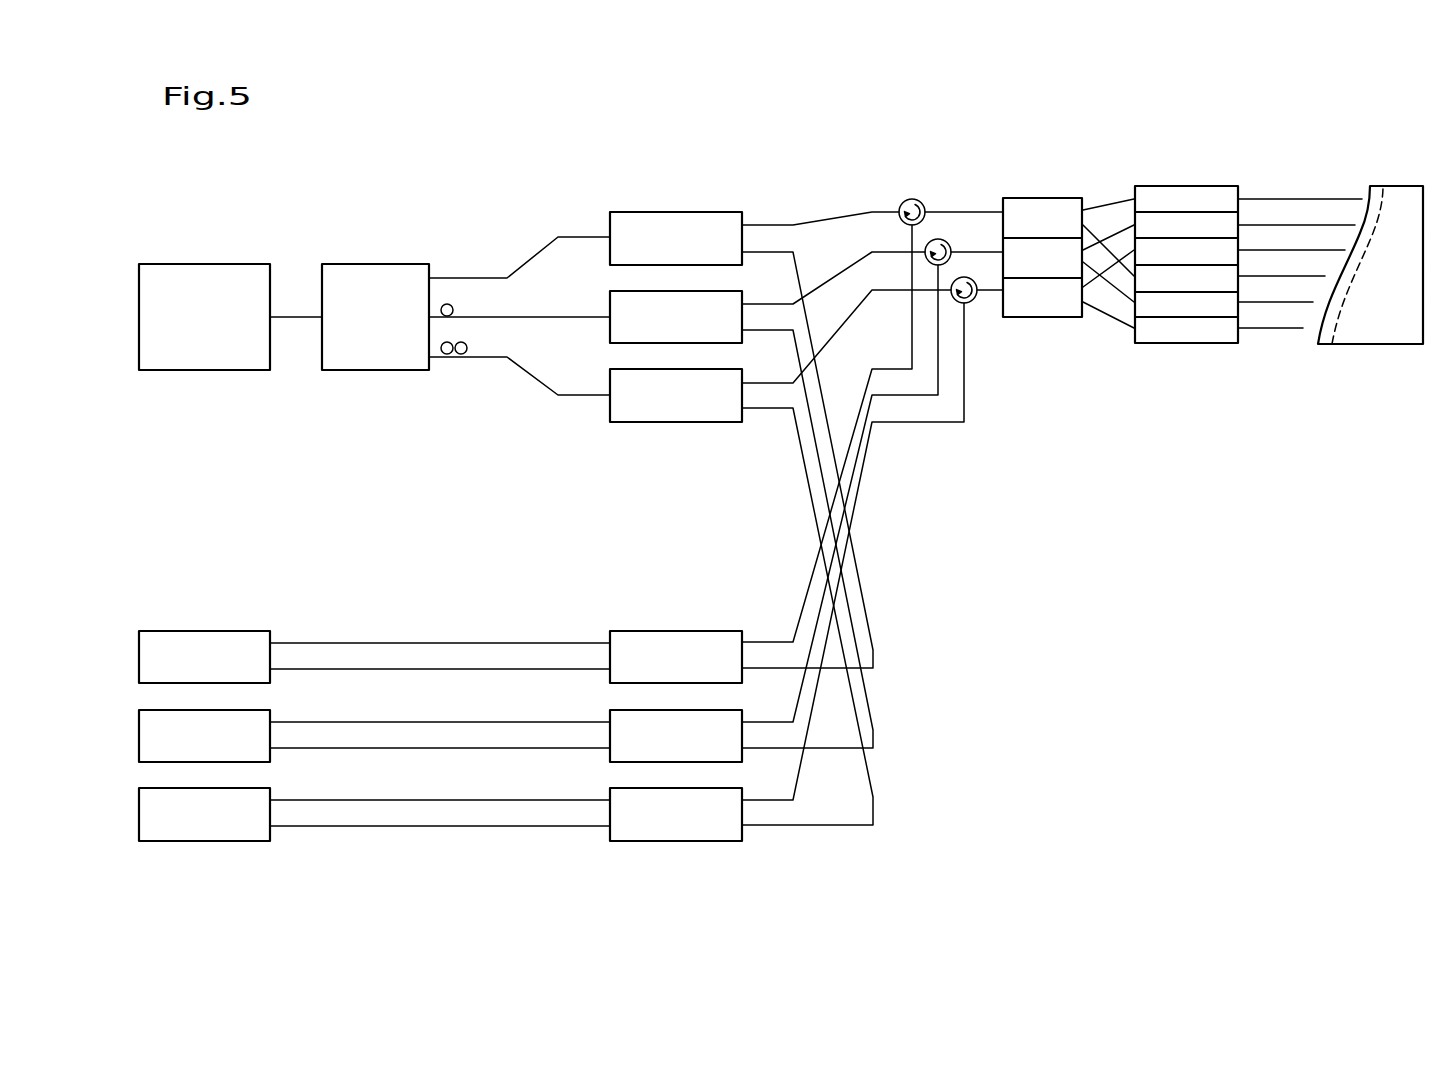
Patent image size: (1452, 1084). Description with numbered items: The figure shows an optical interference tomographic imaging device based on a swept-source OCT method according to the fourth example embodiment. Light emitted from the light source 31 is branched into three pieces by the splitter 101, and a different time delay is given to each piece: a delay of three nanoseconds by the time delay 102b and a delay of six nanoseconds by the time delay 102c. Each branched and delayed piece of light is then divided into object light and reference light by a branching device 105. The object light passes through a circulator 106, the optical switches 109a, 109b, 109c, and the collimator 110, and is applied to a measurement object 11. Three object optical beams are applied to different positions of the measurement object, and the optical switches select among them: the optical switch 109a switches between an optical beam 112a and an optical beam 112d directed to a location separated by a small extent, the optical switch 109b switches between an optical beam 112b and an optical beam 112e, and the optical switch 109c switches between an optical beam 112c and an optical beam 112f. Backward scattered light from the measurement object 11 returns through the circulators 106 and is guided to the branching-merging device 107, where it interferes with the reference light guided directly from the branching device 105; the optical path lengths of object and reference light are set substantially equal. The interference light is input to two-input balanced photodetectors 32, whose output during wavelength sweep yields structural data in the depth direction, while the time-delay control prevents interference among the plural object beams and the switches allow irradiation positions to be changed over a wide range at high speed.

The light source 31 is at (218, 264).
The splitter 101 is at (349, 264).
The time delay 102b is at (447, 303).
The time delay 102c is at (447, 355).
The branching device 105 is at (688, 212).
The circulator 106 is at (912, 199).
The branching-merging device 107 is at (662, 841).
The optical switch 109a is at (1068, 212).
The optical switch 109b is at (1042, 252).
The optical switch 109c is at (1018, 290).
The collimator 110 is at (1185, 186).
The optical beam 112a is at (1330, 195).
The optical beam 112b is at (1292, 223).
The optical beam 112c is at (1252, 245).
The optical beam 112d is at (1303, 278).
The optical beam 112e is at (1278, 303).
The optical beam 112f is at (1252, 330).
The measurement object 11 is at (1388, 188).
The balanced photodetectors 32 is at (192, 841).